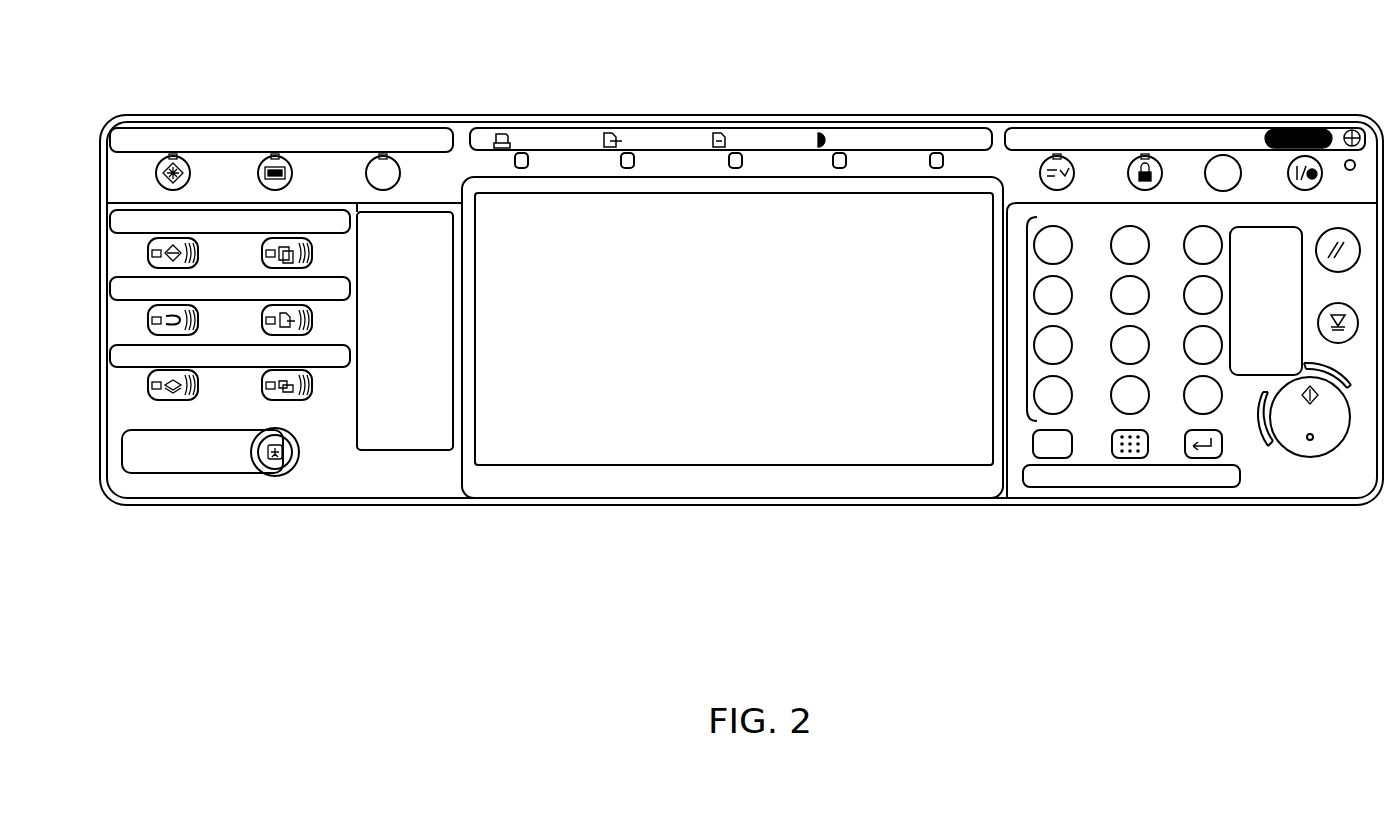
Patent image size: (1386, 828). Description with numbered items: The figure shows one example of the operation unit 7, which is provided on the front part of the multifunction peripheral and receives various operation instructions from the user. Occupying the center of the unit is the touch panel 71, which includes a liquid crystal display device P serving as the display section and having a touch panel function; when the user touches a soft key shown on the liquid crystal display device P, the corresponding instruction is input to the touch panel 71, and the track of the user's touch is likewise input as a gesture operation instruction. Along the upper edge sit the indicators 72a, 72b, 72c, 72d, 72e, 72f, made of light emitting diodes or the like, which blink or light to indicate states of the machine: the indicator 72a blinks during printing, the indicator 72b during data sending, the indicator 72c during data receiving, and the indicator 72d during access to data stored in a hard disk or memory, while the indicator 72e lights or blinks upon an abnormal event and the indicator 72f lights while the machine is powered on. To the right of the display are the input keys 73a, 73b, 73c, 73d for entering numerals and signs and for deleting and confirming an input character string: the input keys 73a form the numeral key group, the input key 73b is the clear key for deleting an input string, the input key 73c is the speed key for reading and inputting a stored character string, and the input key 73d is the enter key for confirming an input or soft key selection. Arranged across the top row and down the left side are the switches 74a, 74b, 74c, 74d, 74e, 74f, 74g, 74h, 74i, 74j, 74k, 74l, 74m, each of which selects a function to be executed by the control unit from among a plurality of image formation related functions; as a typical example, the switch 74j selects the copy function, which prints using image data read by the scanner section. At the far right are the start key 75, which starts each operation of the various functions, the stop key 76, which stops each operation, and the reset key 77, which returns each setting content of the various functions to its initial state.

The operation unit 7 is at (868, 503).
The touch panel 71 is at (729, 475).
The liquid crystal display device P is at (592, 320).
The indicator 72a is at (515, 160).
The indicator 72b is at (621, 160).
The indicator 72c is at (729, 160).
The indicator 72d is at (833, 160).
The indicator 72e is at (930, 160).
The indicator 72f is at (1346, 161).
The input keys (numeral key group) 73a is at (1027, 320).
The input key (clear key) 73b is at (1033, 445).
The input key (speed key) 73c is at (1148, 446).
The input key (enter key) 73d is at (1222, 446).
The switch 74a is at (191, 173).
The switch 74b is at (293, 175).
The switch 74c is at (400, 175).
The switch 74d is at (1040, 173).
The switch 74e is at (1128, 173).
The switch 74f is at (1288, 175).
The switch 74g is at (152, 254).
The switch 74h is at (148, 321).
The switch 74i is at (152, 385).
The switch (copy function switch) 74j is at (313, 253).
The switch 74k is at (313, 320).
The switch 74l is at (313, 385).
The switch 74m is at (275, 463).
The start key 75 is at (1314, 458).
The stop key 76 is at (1353, 338).
The reset key 77 is at (1358, 230).